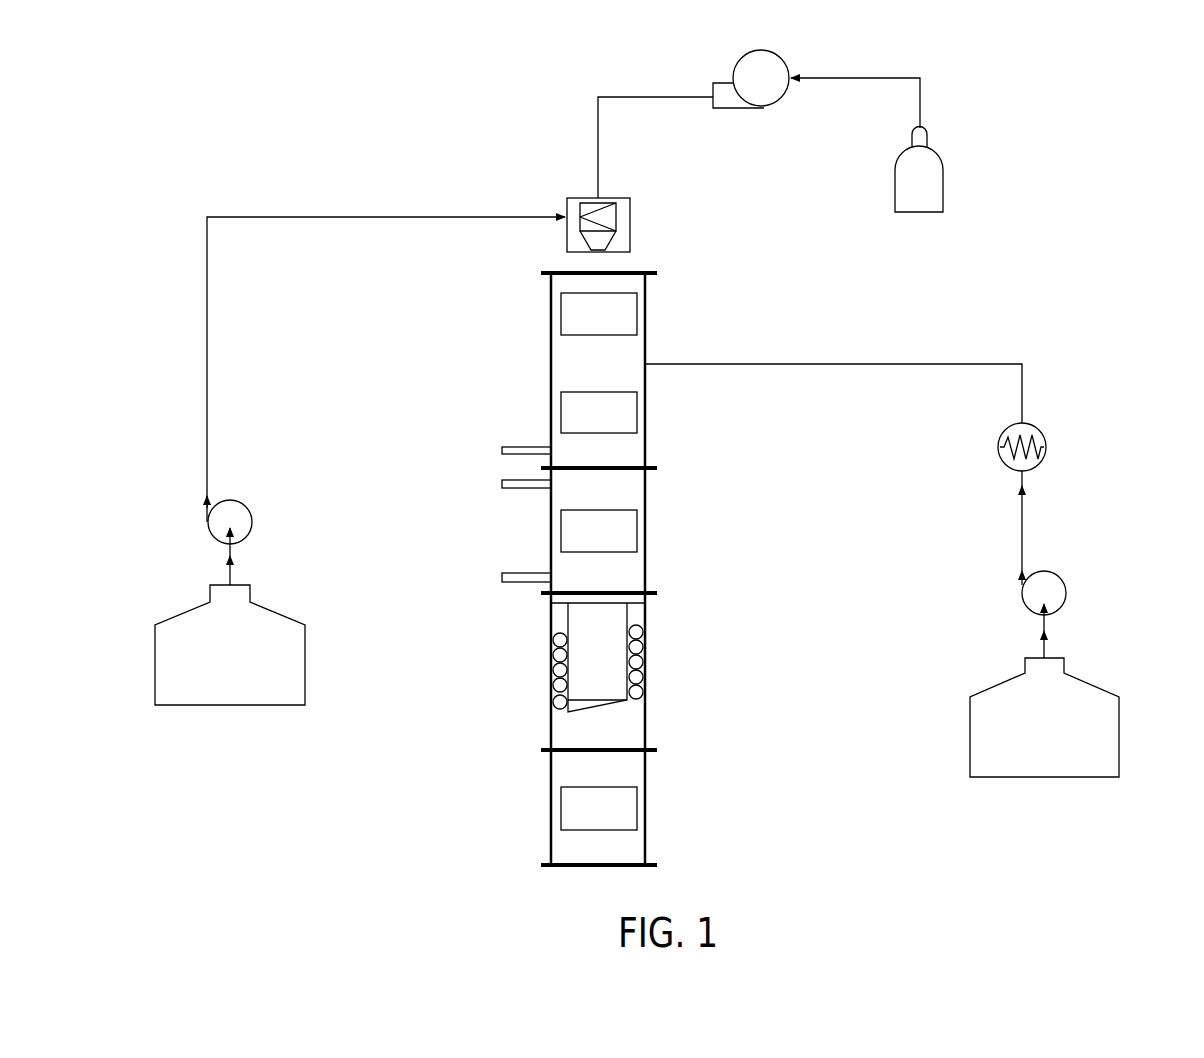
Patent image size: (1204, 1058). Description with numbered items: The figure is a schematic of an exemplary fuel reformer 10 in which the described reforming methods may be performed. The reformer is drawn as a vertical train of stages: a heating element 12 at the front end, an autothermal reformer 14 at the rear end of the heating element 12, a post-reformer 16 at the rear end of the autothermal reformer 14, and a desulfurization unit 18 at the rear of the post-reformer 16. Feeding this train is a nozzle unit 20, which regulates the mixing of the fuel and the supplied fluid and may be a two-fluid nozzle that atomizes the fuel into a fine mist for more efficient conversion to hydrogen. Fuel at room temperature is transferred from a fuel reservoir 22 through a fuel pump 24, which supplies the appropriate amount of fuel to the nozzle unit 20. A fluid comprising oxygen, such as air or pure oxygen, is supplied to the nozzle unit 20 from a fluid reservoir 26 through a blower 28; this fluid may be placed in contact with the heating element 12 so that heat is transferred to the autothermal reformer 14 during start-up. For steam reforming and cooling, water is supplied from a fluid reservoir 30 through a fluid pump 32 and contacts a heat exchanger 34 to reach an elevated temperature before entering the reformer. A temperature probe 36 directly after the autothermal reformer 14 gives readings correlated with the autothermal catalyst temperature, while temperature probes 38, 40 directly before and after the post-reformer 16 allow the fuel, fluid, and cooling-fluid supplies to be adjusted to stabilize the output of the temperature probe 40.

The fuel reformer 10 is at (284, 114).
The heating element 12 is at (615, 328).
The autothermal reformer 14 is at (615, 426).
The post-reformer 16 is at (615, 545).
The desulfurization unit 18 is at (615, 823).
The nozzle unit 20 is at (630, 224).
The fuel reservoir 22 is at (305, 668).
The fuel pump 24 is at (252, 522).
The fluid reservoir 26 is at (943, 193).
The blower 28 is at (760, 108).
The fluid reservoir 30 is at (1119, 738).
The fluid pump 32 is at (1066, 593).
The heat exchanger 34 is at (1046, 445).
The temperature probe 36 is at (502, 450).
The temperature probe 38 is at (502, 484).
The temperature probe 40 is at (502, 577).